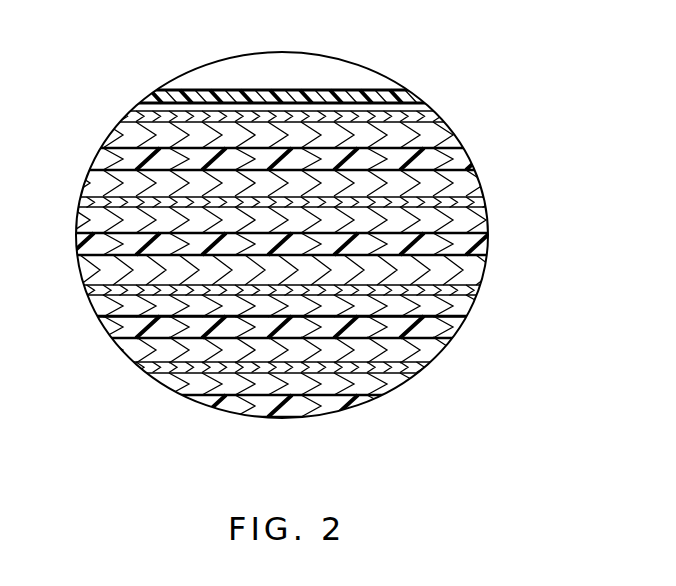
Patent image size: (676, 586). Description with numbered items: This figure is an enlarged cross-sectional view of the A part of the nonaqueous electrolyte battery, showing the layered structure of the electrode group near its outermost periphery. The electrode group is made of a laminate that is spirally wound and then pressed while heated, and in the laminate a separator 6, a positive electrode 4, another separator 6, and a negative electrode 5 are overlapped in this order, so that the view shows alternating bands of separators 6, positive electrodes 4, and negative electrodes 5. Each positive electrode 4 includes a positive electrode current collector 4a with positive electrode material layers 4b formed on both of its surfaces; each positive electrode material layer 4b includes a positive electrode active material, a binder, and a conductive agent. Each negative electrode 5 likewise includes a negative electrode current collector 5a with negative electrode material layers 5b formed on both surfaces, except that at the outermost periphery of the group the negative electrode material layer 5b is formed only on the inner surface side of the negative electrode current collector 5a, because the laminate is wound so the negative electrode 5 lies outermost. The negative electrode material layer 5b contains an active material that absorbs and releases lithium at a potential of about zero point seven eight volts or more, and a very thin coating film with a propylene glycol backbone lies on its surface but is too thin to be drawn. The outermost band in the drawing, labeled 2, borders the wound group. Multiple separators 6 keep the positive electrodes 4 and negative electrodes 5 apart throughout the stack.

The A part A is at (188, 87).
The outer layer 2 is at (403, 98).
The positive electrode 4 is at (316, 296).
The positive electrode current collector 4a is at (460, 200).
The positive electrode material layer 4b is at (452, 187).
The negative electrode 5 is at (317, 212).
The negative electrode current collector 5a is at (433, 115).
The negative electrode material layer 5b is at (430, 135).
The separator 6 is at (115, 160).